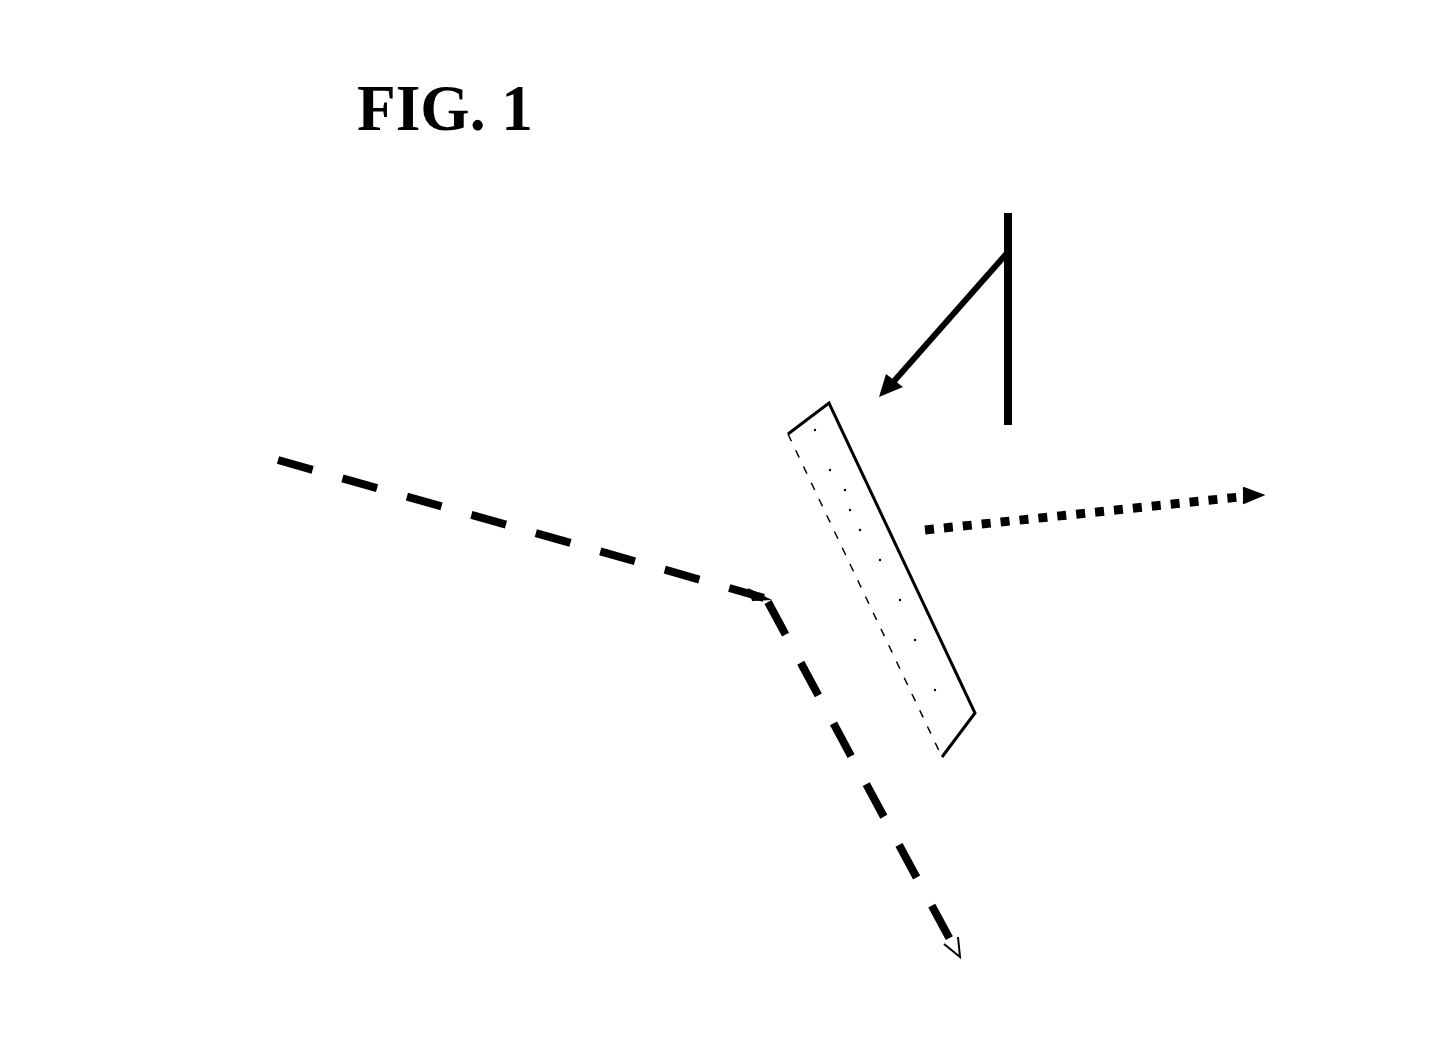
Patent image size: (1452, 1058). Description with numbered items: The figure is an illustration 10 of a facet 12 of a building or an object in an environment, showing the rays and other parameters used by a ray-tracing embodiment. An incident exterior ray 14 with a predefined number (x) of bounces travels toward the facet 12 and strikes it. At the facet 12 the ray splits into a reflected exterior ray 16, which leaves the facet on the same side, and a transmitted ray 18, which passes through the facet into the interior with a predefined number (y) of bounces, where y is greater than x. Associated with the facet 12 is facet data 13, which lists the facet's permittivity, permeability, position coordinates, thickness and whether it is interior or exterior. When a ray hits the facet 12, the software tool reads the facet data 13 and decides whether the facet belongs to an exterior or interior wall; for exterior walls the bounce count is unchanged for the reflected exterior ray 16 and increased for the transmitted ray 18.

The ray tracing system 10 is at (769, 561).
The facet 12 is at (785, 482).
The facet data 13 is at (1213, 225).
The incident exterior ray 14 is at (358, 478).
The reflected exterior ray 16 is at (948, 913).
The transmitted ray 18 is at (1033, 510).